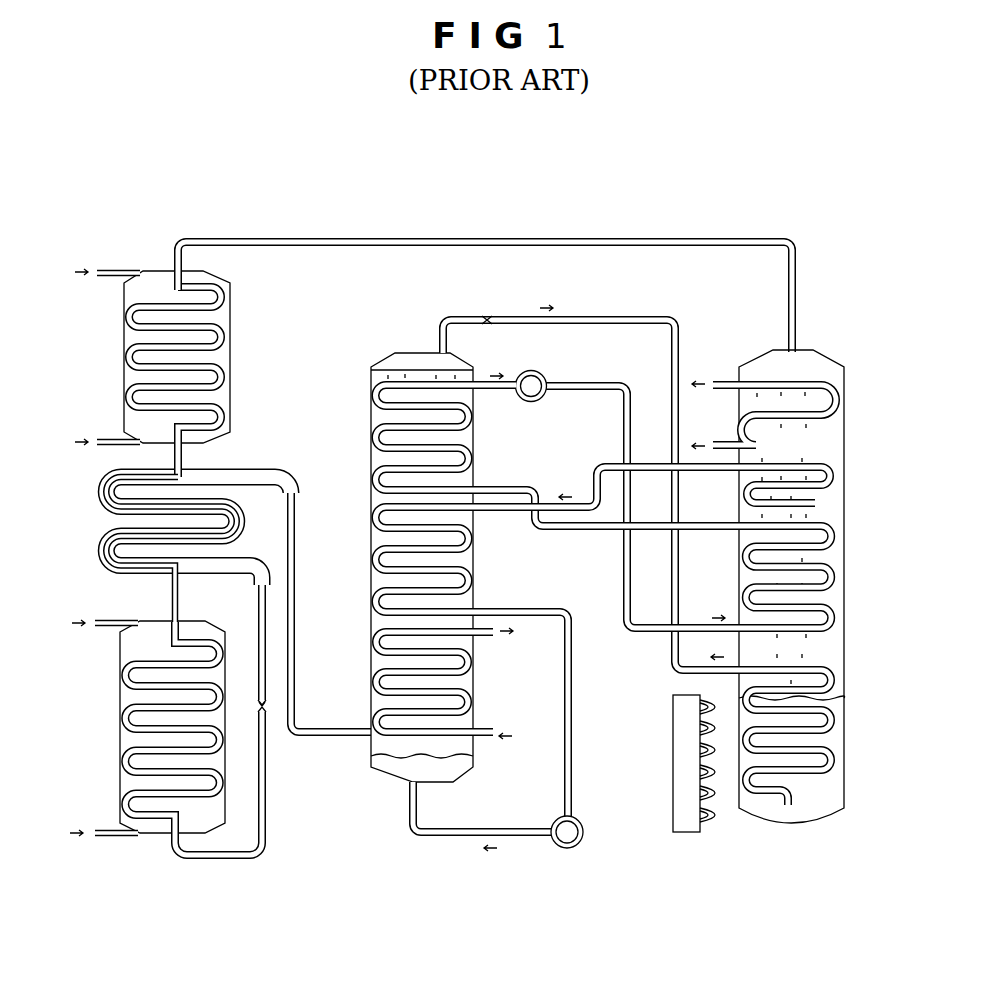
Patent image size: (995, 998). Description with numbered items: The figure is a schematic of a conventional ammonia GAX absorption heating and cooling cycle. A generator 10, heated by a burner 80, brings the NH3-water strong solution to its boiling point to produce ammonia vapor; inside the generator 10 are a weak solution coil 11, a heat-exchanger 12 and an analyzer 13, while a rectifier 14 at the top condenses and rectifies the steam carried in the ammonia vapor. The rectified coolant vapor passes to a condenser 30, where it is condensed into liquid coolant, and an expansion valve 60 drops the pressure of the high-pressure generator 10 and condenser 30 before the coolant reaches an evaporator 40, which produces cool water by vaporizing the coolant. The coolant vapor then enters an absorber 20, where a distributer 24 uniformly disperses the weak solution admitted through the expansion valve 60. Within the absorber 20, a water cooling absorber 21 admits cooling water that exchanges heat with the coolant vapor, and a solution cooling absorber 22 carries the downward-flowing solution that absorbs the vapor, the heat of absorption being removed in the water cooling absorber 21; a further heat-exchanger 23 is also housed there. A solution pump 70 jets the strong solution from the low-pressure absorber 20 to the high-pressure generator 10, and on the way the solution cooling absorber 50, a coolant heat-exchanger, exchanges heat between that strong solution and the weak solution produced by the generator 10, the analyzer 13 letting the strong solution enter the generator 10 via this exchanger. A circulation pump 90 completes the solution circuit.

The generator 10 is at (846, 753).
The weak solution coil 11 is at (832, 712).
The heat-exchanger 12 is at (838, 582).
The analyzer 13 is at (838, 480).
The rectifier 14 is at (838, 393).
The absorber 20 is at (376, 362).
The water cooling absorber 21 is at (378, 682).
The solution cooling absorber 22 is at (380, 558).
The heat-exchanger 23 is at (378, 432).
The distributer 24 is at (418, 366).
The condenser 30 is at (123, 342).
The evaporator 40 is at (121, 720).
The solution cooling absorber 50 is at (105, 540).
The expansion valve 60 is at (487, 316).
The solution pump 70 is at (565, 849).
The burner 80 is at (688, 835).
The circulation pump 90 is at (548, 381).